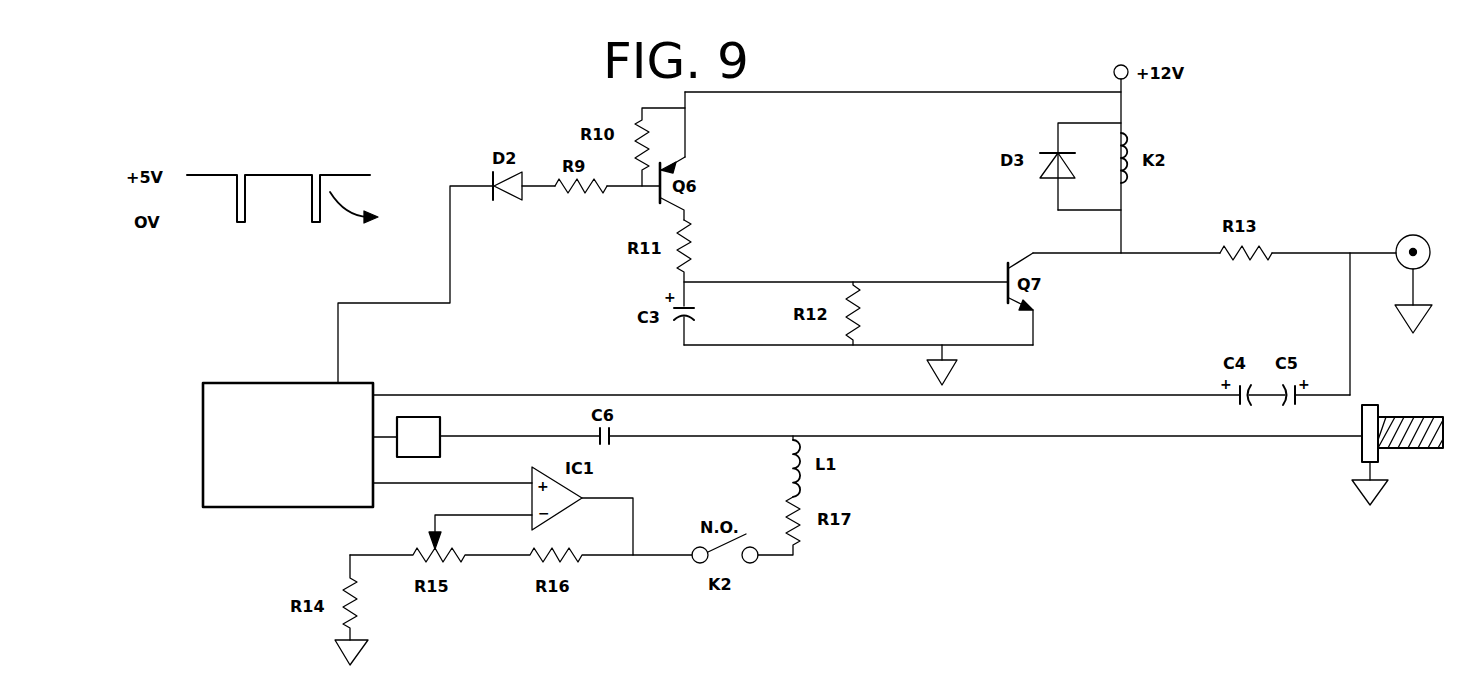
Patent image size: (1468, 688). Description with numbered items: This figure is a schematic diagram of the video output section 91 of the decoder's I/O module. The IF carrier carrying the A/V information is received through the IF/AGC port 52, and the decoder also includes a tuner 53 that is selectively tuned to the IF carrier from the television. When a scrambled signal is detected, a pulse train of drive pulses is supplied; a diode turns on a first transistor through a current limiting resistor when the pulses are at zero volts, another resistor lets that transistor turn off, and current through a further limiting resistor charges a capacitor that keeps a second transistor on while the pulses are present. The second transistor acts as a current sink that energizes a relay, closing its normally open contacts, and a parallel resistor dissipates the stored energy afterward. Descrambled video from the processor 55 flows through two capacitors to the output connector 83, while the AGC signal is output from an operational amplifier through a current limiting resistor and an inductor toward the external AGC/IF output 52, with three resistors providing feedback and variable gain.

The video output section 91 is at (504, 101).
The processor 55 is at (295, 383).
The tuner 53 is at (440, 446).
The output connector 83 is at (1426, 237).
The IF/AGC port 52 is at (1421, 448).